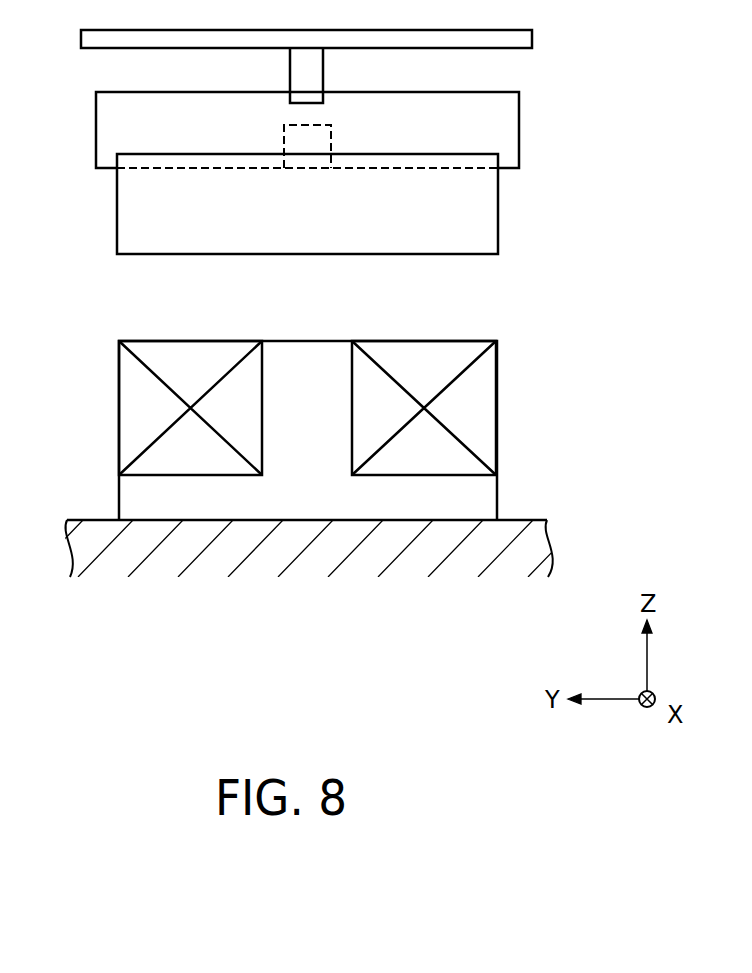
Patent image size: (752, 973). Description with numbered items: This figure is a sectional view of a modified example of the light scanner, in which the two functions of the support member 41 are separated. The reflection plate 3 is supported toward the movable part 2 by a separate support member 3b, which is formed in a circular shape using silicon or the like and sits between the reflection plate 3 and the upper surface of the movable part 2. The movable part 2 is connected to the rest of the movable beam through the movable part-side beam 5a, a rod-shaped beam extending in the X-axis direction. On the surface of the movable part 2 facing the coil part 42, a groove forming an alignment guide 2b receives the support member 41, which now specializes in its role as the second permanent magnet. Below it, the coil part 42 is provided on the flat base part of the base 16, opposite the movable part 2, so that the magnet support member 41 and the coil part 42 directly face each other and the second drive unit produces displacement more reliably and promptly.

The movable part 2 is at (110, 126).
The alignment guide 2b is at (185, 154).
The reflection plate 3 is at (522, 36).
The support member 3b is at (310, 76).
The movable part-side beam 5a is at (331, 138).
The base 16 is at (508, 517).
The support member 41 is at (498, 212).
The coil part 42 is at (498, 417).